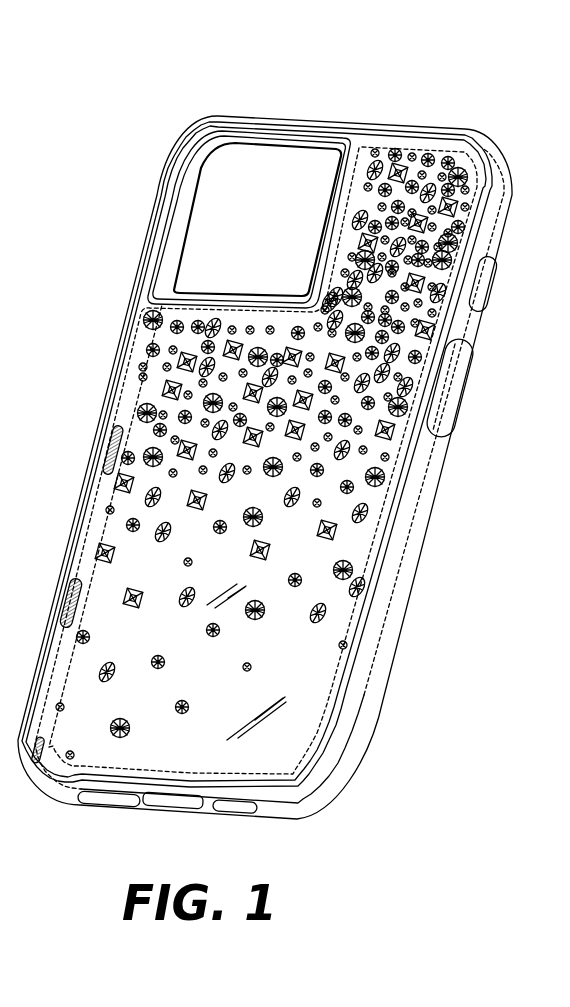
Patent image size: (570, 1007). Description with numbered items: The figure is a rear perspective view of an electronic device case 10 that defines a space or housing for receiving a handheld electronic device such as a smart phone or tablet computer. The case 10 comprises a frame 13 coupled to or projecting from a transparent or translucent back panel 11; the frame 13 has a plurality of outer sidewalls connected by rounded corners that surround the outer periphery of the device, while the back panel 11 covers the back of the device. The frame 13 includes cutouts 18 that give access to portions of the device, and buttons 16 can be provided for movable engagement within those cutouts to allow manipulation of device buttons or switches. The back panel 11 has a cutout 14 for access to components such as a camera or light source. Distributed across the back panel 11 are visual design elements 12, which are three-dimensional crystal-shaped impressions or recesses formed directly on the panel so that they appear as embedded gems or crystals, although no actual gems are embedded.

The electronic device case 10 is at (98, 148).
The back panel 11 is at (288, 743).
The visual design elements 12 is at (124, 594).
The frame 13 is at (395, 597).
The cutouts 14 is at (277, 186).
The buttons 16 is at (458, 400).
The cutouts 18 is at (484, 286).